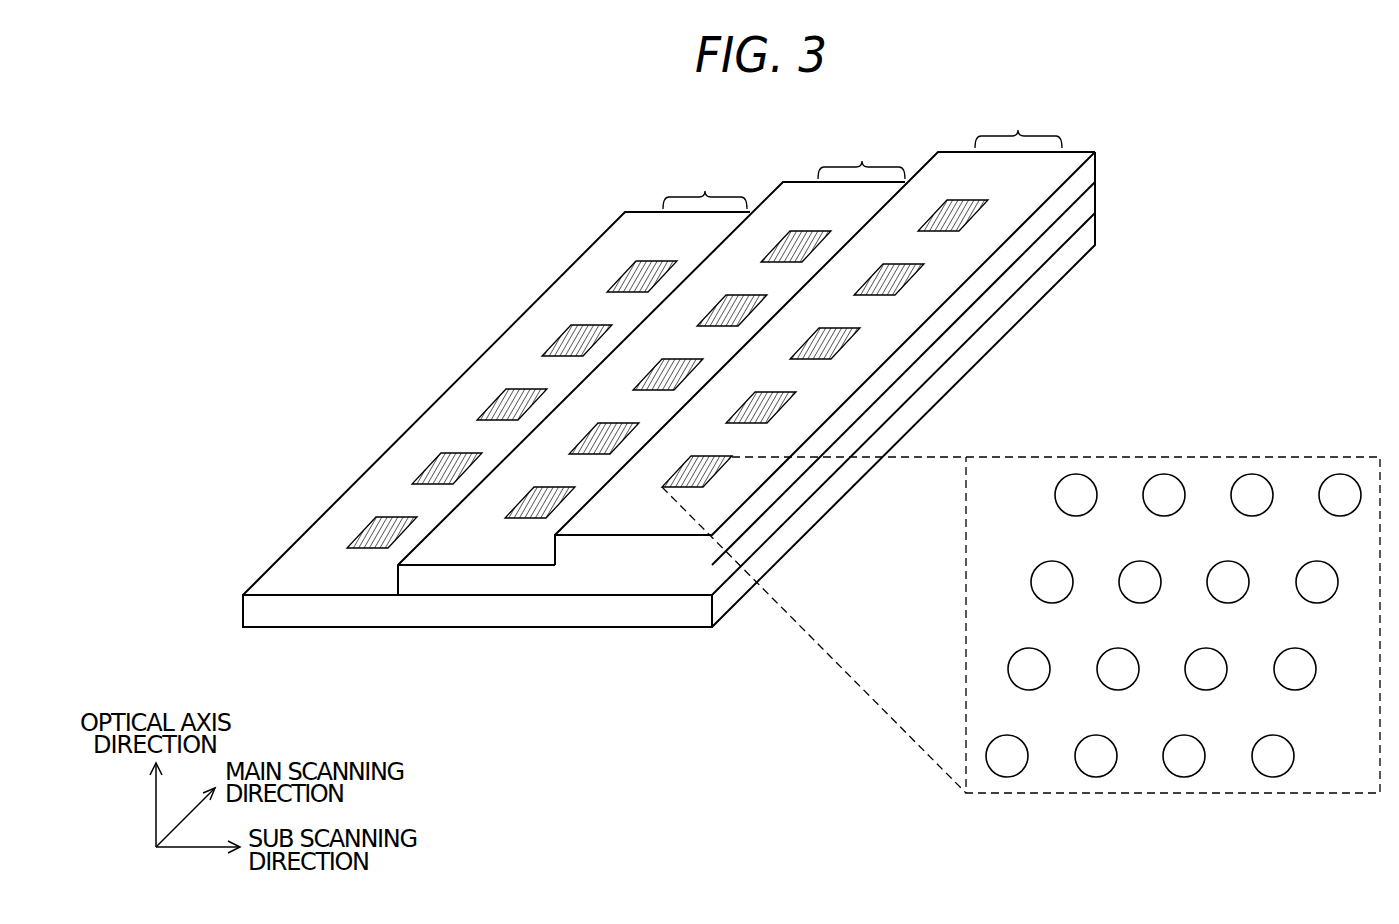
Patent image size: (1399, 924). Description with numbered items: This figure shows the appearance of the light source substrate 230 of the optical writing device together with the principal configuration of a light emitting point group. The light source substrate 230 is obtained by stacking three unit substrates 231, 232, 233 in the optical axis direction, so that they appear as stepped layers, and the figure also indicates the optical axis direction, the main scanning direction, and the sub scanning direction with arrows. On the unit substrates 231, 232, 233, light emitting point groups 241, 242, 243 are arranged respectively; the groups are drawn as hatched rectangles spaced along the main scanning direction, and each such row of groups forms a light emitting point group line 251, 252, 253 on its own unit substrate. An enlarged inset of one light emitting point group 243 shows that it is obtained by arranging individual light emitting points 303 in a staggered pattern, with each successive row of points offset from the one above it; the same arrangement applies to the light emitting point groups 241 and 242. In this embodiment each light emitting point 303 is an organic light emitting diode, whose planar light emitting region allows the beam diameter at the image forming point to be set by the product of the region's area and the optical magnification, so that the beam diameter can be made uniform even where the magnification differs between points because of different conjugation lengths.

The light source substrate 230 is at (467, 278).
The unit substrate 231 is at (442, 418).
The unit substrate 232 is at (522, 547).
The unit substrate 233 is at (630, 518).
The light emitting point group 241 is at (380, 525).
The light emitting point group 242 is at (515, 507).
The light emitting point group 243 is at (712, 470).
The light emitting point group line 251 is at (705, 183).
The light emitting point group line 252 is at (861, 153).
The light emitting point group line 253 is at (1018, 121).
The light emitting point 303 is at (1005, 778).